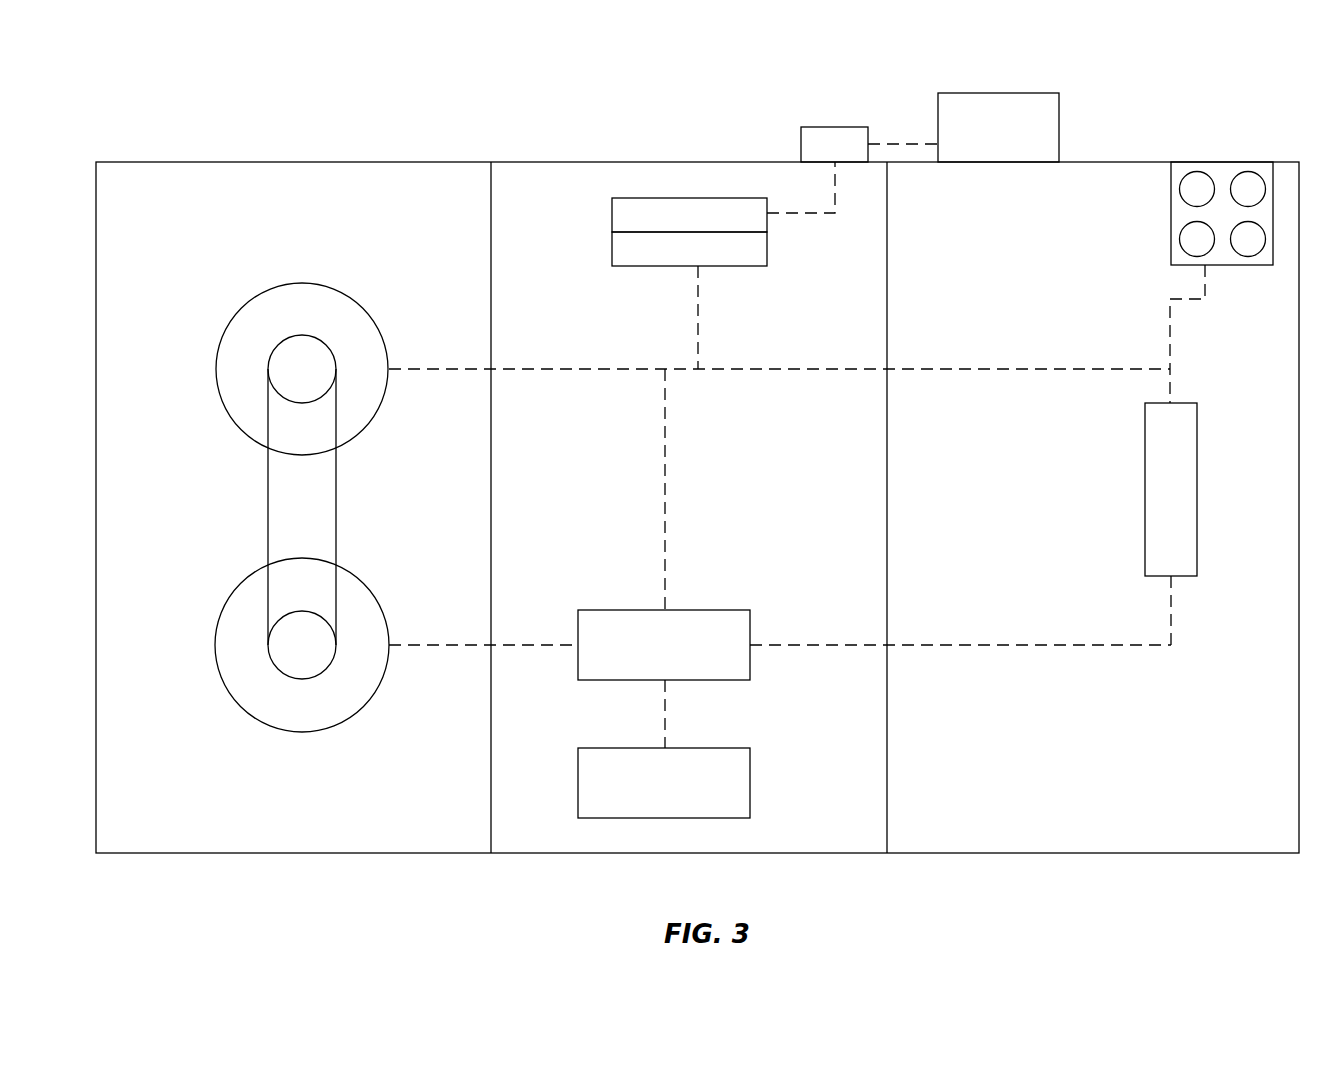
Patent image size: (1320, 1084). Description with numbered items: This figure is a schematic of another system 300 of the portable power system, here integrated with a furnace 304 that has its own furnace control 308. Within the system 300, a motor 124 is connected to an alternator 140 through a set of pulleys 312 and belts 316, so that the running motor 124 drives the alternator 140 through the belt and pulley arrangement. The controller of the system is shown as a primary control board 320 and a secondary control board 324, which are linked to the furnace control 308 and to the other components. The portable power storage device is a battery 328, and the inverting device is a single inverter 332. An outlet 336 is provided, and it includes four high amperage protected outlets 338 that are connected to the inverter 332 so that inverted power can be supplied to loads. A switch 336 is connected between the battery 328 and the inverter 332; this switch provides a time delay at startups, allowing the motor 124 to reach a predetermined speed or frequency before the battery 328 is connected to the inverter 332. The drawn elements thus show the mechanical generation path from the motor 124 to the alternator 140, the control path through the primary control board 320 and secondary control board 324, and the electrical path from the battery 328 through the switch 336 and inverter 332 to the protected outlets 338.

The system 300 is at (628, 140).
The motor 124 is at (380, 327).
The alternator 140 is at (372, 592).
The pulleys 312 is at (276, 344).
The belts 316 is at (268, 543).
The primary control board 320 is at (612, 210).
The secondary control board 324 is at (612, 250).
The furnace control 308 is at (826, 127).
The furnace 304 is at (1007, 93).
The outlet / switch 336 is at (1193, 161).
The high amperage protected outlets 338 is at (1247, 182).
The inverter 332 is at (1145, 528).
The battery 328 is at (750, 800).